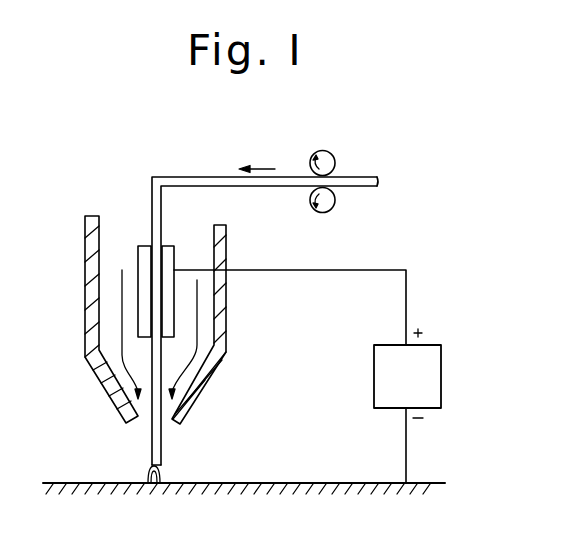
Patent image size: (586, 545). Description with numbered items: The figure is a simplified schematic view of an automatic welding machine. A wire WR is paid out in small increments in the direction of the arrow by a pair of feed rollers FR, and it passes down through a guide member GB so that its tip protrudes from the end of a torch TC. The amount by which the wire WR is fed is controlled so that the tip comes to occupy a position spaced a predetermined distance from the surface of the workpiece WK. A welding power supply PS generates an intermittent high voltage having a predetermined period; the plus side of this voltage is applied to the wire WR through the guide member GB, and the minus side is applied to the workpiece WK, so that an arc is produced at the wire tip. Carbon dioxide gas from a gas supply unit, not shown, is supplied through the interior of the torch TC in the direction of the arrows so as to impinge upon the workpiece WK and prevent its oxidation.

The feed rollers FR is at (331, 154).
The wire WR is at (373, 177).
The guide member GB is at (147, 246).
The torch TC is at (228, 336).
The welding power supply PS is at (440, 346).
The workpiece WK is at (271, 483).